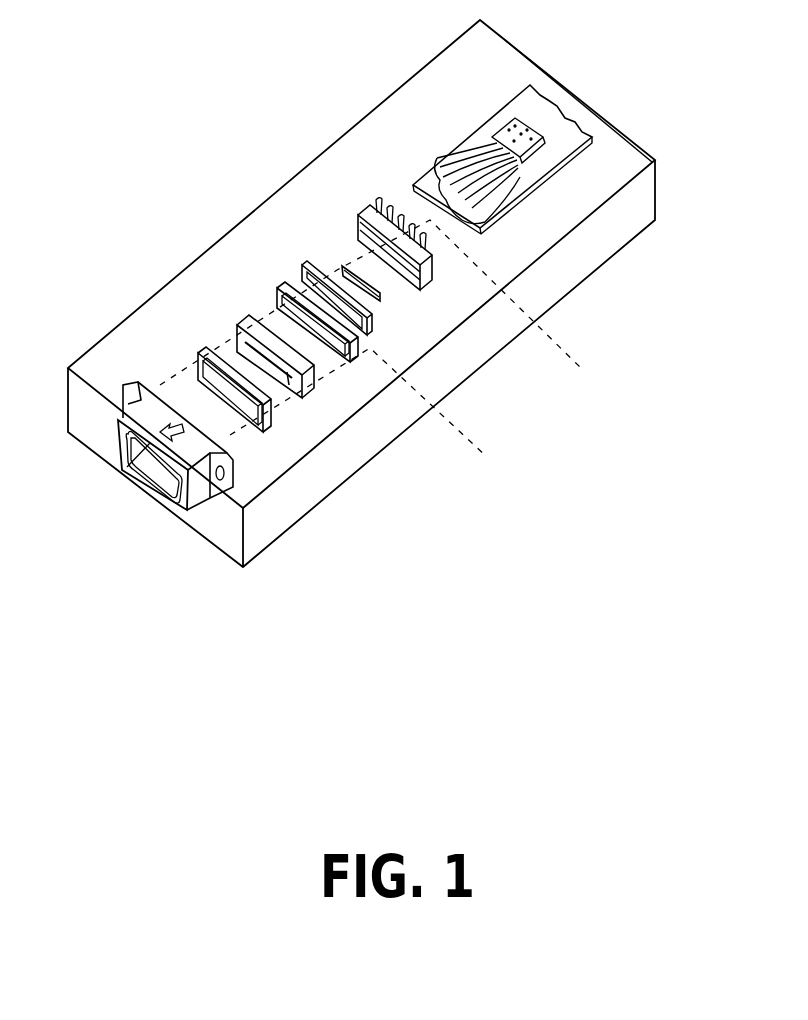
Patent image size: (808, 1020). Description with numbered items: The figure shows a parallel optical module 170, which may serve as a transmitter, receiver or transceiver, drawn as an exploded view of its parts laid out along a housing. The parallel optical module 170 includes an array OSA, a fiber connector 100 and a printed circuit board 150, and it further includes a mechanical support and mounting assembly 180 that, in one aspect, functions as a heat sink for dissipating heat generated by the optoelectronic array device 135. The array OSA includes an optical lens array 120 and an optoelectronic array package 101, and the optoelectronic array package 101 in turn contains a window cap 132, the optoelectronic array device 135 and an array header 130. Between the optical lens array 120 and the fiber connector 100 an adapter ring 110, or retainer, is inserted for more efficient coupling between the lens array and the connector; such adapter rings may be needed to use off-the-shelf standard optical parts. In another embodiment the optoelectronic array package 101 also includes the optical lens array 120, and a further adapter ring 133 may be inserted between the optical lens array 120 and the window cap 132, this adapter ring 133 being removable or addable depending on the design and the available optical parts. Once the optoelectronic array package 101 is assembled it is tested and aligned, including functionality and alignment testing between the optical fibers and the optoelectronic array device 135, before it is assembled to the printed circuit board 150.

The fiber connector 100 is at (120, 412).
The optoelectronic array package 101 is at (583, 370).
The adapter ring 110 is at (190, 348).
The optical lens array 120 is at (233, 305).
The array header 130 is at (447, 280).
The window cap 132 is at (298, 253).
The adapter ring 133 is at (277, 270).
The optoelectronic array device 135 is at (400, 297).
The printed circuit board 150 is at (528, 206).
The parallel optical module 170 is at (648, 233).
The mechanical support and mounting assembly 180 is at (617, 110).